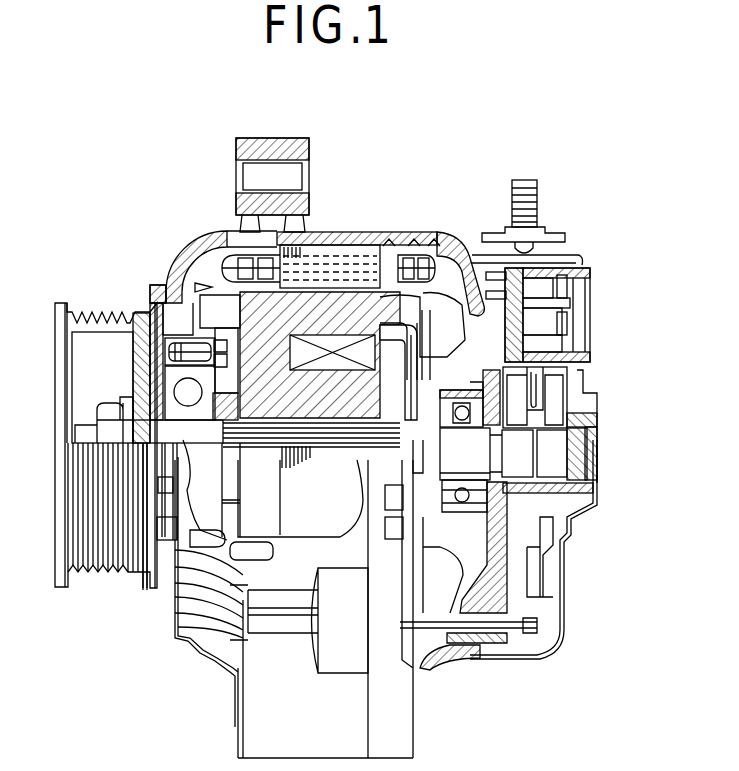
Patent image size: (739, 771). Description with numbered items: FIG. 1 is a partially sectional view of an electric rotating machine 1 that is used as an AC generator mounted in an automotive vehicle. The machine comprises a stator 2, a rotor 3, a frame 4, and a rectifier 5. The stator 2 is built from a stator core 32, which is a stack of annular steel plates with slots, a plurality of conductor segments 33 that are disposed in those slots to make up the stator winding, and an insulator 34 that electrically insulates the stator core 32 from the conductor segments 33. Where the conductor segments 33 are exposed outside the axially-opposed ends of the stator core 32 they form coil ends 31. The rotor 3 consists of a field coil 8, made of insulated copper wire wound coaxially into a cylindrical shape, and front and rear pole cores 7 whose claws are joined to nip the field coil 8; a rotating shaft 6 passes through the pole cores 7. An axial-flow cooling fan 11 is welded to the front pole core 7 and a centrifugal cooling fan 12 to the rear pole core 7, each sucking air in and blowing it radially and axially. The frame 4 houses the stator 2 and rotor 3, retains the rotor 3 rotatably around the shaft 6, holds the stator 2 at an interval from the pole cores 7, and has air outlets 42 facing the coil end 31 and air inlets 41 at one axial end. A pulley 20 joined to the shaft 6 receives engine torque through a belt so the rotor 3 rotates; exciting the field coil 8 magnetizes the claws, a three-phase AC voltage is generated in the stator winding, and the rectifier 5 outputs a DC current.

The electric rotating machine 1 is at (462, 111).
The stator 2 is at (431, 250).
The rotor 3 is at (175, 285).
The frame 4 is at (328, 337).
The rectifier 5 is at (545, 556).
The rotating shaft 6 is at (133, 388).
The pole cores 7 is at (400, 312).
The field coil 8 is at (360, 262).
The axial-flow cooling fan 11 is at (168, 318).
The centrifugal cooling fan 12 is at (540, 308).
The pulley 20 is at (68, 308).
The coil ends 31 is at (230, 243).
The stator core 32 is at (338, 240).
The conductor segments 33 is at (428, 246).
The insulator 34 is at (410, 238).
The air inlets 41 is at (160, 310).
The air outlets 42 is at (207, 243).